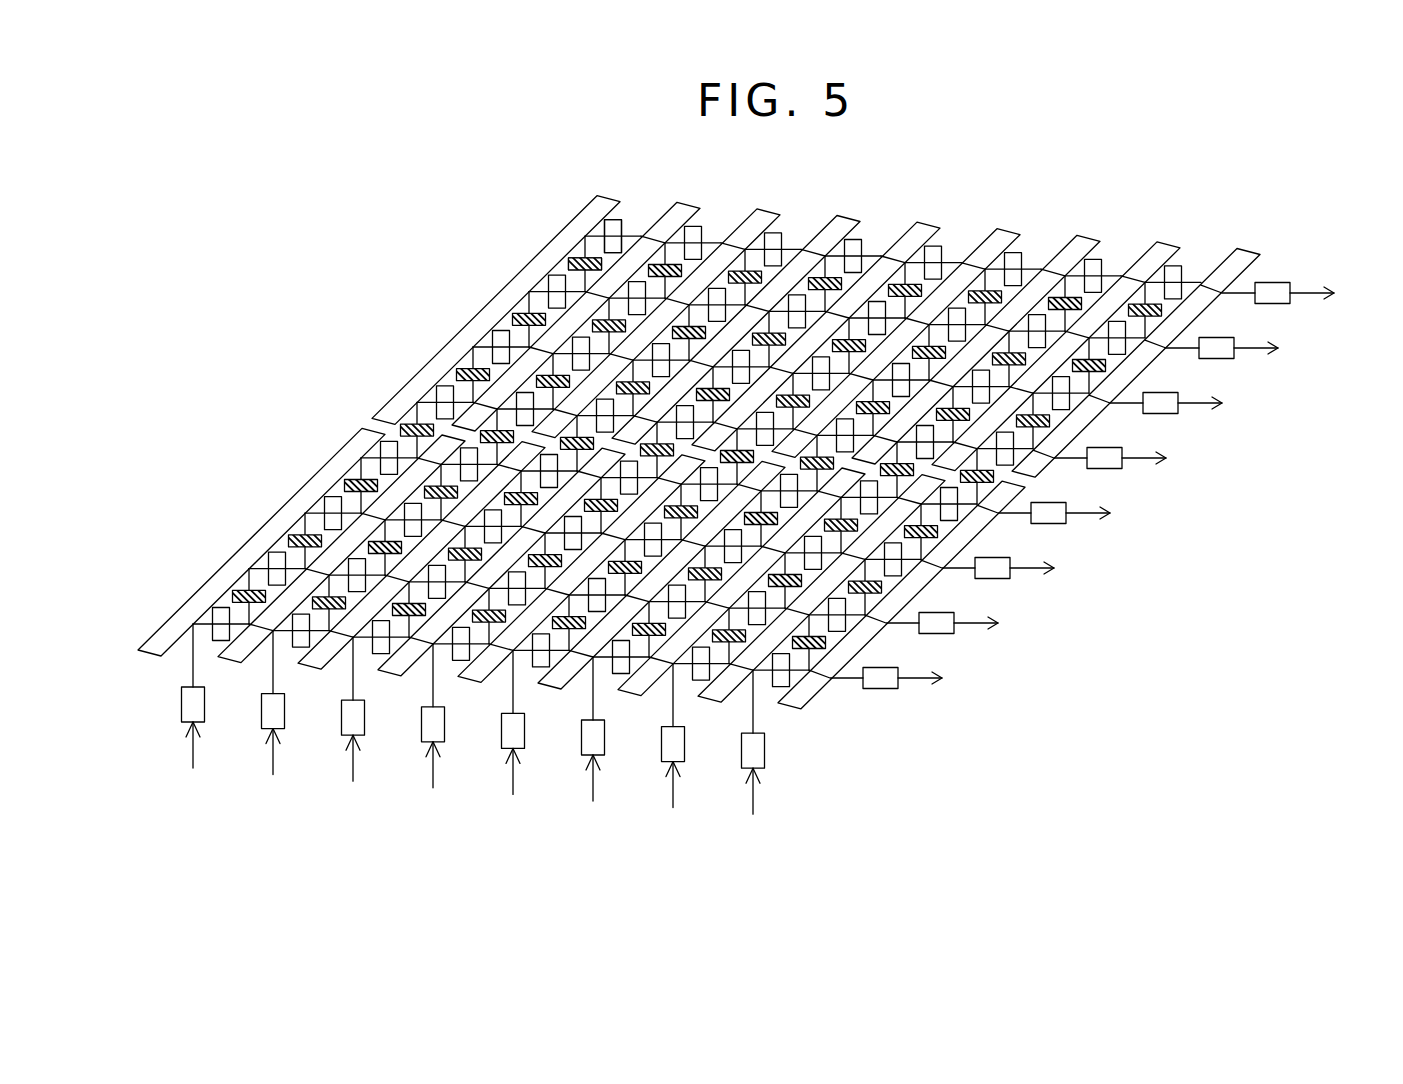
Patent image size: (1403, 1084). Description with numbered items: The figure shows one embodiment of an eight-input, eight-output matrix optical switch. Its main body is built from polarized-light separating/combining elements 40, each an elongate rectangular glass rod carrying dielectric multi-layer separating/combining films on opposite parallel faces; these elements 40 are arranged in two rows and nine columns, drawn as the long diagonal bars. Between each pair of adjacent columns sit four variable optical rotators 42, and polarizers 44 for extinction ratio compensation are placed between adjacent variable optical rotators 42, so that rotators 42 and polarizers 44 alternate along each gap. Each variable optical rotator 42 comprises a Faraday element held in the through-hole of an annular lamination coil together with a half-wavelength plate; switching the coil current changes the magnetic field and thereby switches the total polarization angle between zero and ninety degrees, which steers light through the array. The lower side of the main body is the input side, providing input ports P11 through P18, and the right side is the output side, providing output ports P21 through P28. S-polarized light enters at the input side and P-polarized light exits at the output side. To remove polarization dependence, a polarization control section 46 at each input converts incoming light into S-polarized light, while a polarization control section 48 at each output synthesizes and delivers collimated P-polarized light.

The polarized-light separating/combining element 40 is at (486, 312).
The variable optical rotator 42 is at (615, 223).
The polarizer for extinction ratio compensation 44 is at (572, 257).
The polarization control section 46 is at (502, 738).
The polarization control section 48 is at (1102, 515).
The input port P11 is at (199, 715).
The input port P18 is at (766, 748).
The output port P21 is at (906, 679).
The output port P28 is at (1298, 294).